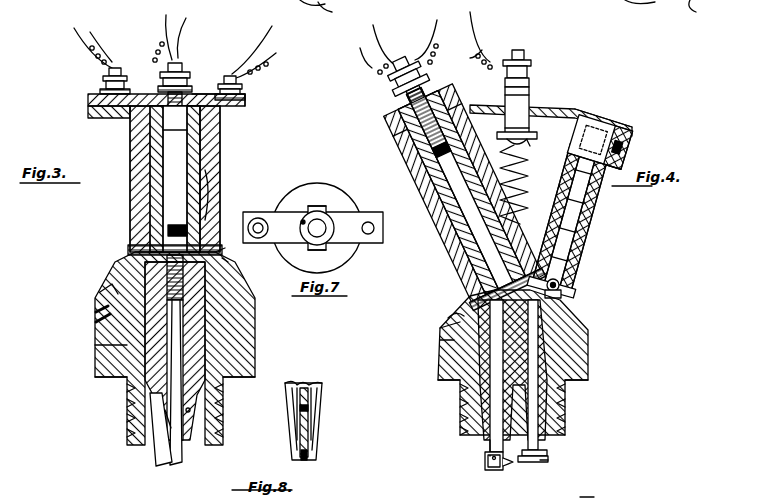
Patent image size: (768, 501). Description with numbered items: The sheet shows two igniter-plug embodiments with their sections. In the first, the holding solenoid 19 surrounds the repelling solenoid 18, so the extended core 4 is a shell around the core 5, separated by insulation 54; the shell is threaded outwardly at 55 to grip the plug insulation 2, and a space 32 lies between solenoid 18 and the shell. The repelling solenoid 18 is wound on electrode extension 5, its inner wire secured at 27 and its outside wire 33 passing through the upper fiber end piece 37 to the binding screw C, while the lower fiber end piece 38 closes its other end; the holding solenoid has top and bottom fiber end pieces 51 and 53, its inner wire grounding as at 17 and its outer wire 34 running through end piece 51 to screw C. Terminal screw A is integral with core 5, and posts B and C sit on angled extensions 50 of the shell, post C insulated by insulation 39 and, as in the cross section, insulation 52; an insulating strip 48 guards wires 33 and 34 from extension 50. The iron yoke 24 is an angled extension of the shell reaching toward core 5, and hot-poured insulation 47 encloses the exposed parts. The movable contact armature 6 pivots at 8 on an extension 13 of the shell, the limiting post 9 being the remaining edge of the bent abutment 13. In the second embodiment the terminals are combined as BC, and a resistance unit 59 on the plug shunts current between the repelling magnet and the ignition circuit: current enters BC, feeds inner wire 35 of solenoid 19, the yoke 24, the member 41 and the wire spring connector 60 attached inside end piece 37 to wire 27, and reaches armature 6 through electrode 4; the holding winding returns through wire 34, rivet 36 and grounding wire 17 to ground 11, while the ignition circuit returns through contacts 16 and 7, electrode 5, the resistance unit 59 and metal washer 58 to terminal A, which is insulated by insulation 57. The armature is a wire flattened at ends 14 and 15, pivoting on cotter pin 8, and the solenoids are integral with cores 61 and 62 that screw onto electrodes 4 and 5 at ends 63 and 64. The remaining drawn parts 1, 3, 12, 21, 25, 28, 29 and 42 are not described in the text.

In FIG. 3, the plug body shell 1 is at (100, 325).
In FIG. 4, the plug body shell 1 is at (446, 360).
In FIG. 3, the insulation 2 is at (105, 345).
In FIG. 3, the threaded lower shell 3 is at (115, 358).
In FIG. 4, the threaded lower shell 3 is at (588, 350).
In FIG. 3, the extended core 4 is at (240, 318).
In FIG. 7, the extended core 4 is at (329, 234).
In FIG. 8, the extended core 4 is at (316, 448).
In FIG. 4, the extended core 4 is at (490, 393).
In FIG. 4, the core 5 is at (592, 364).
In FIG. 3, the movable contact armature 6 is at (179, 467).
In FIG. 8, the movable contact armature 6 is at (318, 460).
In FIG. 4, the movable contact armature 6 is at (504, 465).
In FIG. 3, the contact 7 is at (154, 466).
In FIG. 4, the contact 7 is at (542, 454).
In FIG. 3, the pivot 8 is at (190, 410).
In FIG. 8, the pivot 8 is at (308, 411).
In FIG. 4, the pivot 8 is at (489, 469).
In FIG. 8, the limiting post 9 is at (298, 444).
In FIG. 4, the limiting post 9 is at (487, 445).
In FIG. 3, the ground 11 is at (100, 290).
In FIG. 4, the ground 11 is at (442, 342).
In FIG. 3, the threaded stem 12 is at (195, 295).
In FIG. 8, the extension 13 is at (312, 430).
In FIG. 4, the flattened armature end 14 is at (484, 465).
In FIG. 4, the flattened armature end 15 is at (536, 460).
In FIG. 4, the contact point 16 is at (552, 462).
In FIG. 3, the grounding wire 17 is at (120, 261).
In FIG. 4, the grounding wire 17 is at (442, 326).
In FIG. 3, the repelling solenoid 18 is at (138, 178).
In FIG. 4, the repelling solenoid 18 is at (593, 226).
In FIG. 3, the holding solenoid 19 is at (152, 202).
In FIG. 4, the holding solenoid 19 is at (430, 241).
In FIG. 3, the inner sleeve 21 is at (220, 162).
In FIG. 3, the iron yoke 24 is at (212, 100).
In FIG. 7, the iron yoke 24 is at (340, 246).
In FIG. 4, the iron yoke 24 is at (578, 112).
In FIG. 4, the auxiliary plug shell 25 is at (454, 191).
In FIG. 3, the inner wire 27 is at (216, 248).
In FIG. 4, the inner wire 27 is at (608, 230).
In FIG. 4, the conductor rod 28 is at (602, 228).
In FIG. 3, the contact block 29 is at (165, 232).
In FIG. 3, the space 32 is at (205, 190).
In FIG. 3, the outside wire 33 is at (205, 146).
In FIG. 7, the outside wire 33 is at (303, 222).
In FIG. 4, the outside wire 33 is at (528, 142).
In FIG. 3, the outer wire 34 is at (132, 130).
In FIG. 7, the outer wire 34 is at (315, 256).
In FIG. 4, the inner wire 35 is at (440, 203).
In FIG. 4, the rivet 36 is at (456, 310).
In FIG. 7, the top fiber end piece 37 is at (330, 225).
In FIG. 4, the top fiber end piece 37 is at (625, 148).
In FIG. 3, the bottom fiber end piece 38 is at (224, 262).
In FIG. 4, the bottom fiber end piece 38 is at (581, 273).
In FIG. 3, the insulation 39 is at (88, 97).
In FIG. 4, the member 41 is at (635, 139).
In FIG. 4, the terminal block 42 is at (605, 125).
In FIG. 3, the hot-poured insulation 47 is at (168, 92).
In FIG. 3, the insulating strip 48 is at (88, 112).
In FIG. 3, the angled extensions 50 is at (245, 103).
In FIG. 7, the angled extensions 50 is at (374, 230).
In FIG. 3, the top fiber end piece 51 is at (222, 128).
In FIG. 7, the top fiber end piece 51 is at (325, 208).
In FIG. 7, the insulation 52 is at (264, 242).
In FIG. 3, the bottom fiber end piece 53 is at (222, 226).
In FIG. 3, the insulation 54 is at (230, 340).
In FIG. 3, the outward threads 55 is at (98, 315).
In FIG. 4, the insulation 57 is at (515, 105).
In FIG. 4, the metal washer 58 is at (502, 132).
In FIG. 4, the resistance unit 59 is at (514, 172).
In FIG. 4, the wire spring connector 60 is at (638, 146).
In FIG. 4, the core 61 is at (428, 203).
In FIG. 4, the core 62 is at (591, 225).
In FIG. 4, the end 63 is at (482, 284).
In FIG. 4, the end 64 is at (556, 285).
In FIG. 3, the terminal screw A is at (183, 64).
In FIG. 4, the terminal screw A is at (528, 73).
In FIG. 3, the terminal post B is at (230, 76).
In FIG. 3, the terminal post C is at (113, 68).
In FIG. 4, the combined terminal BC is at (405, 72).